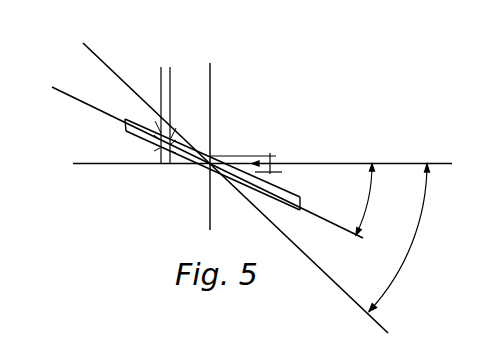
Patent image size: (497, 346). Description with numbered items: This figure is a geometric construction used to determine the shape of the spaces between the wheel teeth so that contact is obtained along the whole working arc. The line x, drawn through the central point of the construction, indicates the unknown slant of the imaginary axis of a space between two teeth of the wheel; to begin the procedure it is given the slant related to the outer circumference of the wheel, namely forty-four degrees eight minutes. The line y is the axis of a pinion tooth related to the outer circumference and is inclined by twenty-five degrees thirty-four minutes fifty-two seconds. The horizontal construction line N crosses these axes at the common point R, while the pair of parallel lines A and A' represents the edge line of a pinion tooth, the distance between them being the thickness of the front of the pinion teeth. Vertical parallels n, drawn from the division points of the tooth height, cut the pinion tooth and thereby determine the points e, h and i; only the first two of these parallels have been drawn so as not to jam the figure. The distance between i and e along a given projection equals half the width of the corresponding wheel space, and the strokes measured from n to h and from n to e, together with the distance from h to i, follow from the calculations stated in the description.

The line xx x is at (248, 186).
The line yy y is at (203, 164).
The construction line NN N is at (260, 164).
The point R is at (204, 146).
The point n is at (164, 124).
The line AA A is at (203, 174).
The line A' A' is at (216, 155).
The point e is at (164, 124).
The point h is at (164, 135).
The point i is at (162, 156).